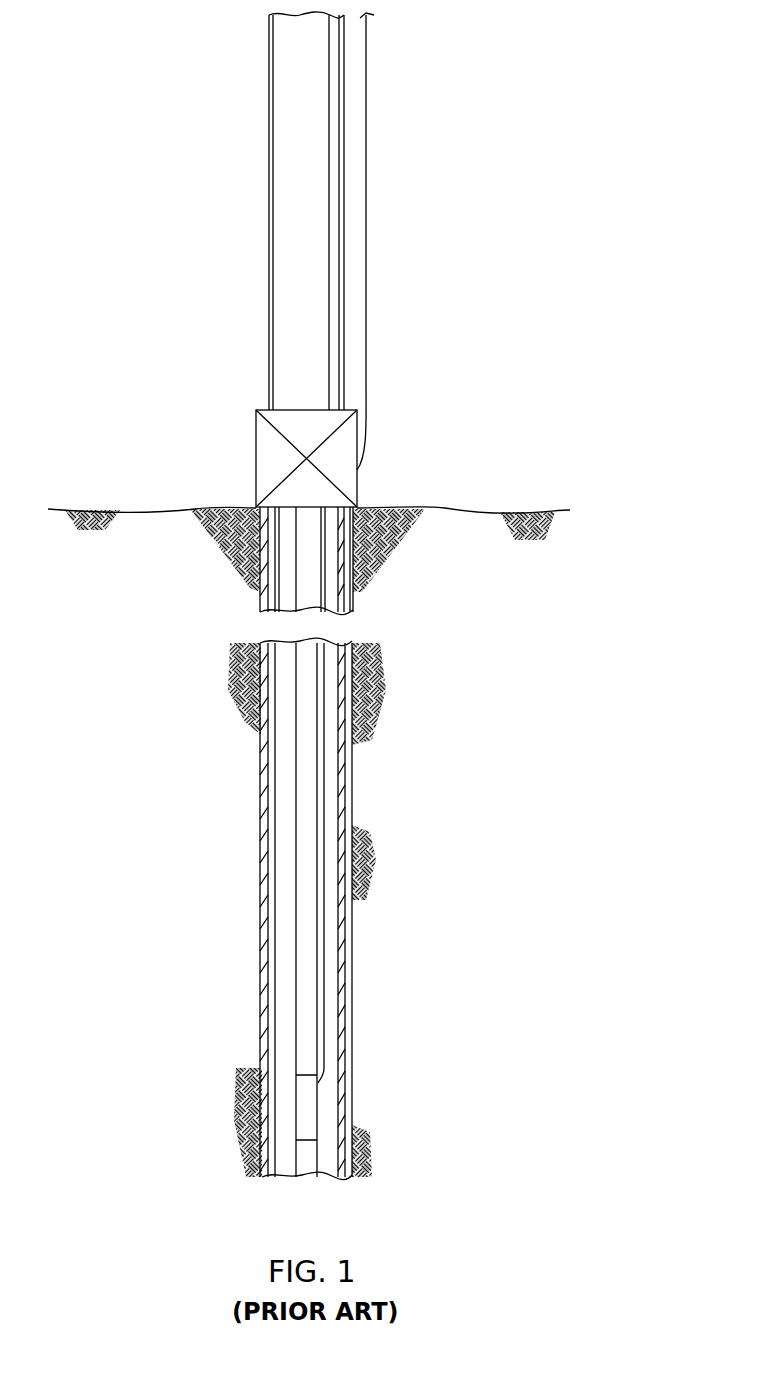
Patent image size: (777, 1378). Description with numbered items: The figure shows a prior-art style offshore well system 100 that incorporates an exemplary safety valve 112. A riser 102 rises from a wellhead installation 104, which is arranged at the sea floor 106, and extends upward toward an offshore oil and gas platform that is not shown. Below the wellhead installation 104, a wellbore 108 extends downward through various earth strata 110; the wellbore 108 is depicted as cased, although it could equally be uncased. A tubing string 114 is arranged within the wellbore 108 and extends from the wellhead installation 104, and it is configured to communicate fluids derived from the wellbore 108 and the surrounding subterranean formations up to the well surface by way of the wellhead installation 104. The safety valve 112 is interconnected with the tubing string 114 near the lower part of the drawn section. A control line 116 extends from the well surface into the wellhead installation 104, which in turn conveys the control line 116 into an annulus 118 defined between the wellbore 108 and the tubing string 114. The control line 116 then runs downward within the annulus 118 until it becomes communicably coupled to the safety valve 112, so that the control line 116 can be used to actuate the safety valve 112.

The well system 100 is at (553, 346).
The riser 102 is at (268, 225).
The wellhead installation 104 is at (256, 462).
The sea floor 106 is at (450, 510).
The wellbore 108 is at (260, 575).
The earth strata 110 is at (451, 722).
The safety valve 112 is at (317, 1117).
The tubing string 114 is at (296, 790).
The control line 116 is at (366, 115).
The annulus 118 is at (285, 970).